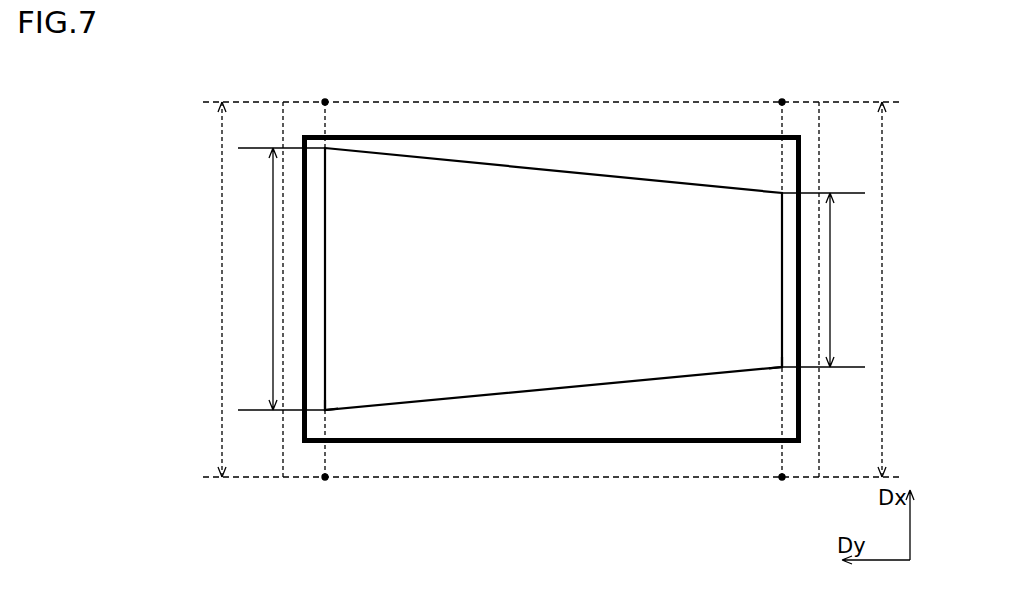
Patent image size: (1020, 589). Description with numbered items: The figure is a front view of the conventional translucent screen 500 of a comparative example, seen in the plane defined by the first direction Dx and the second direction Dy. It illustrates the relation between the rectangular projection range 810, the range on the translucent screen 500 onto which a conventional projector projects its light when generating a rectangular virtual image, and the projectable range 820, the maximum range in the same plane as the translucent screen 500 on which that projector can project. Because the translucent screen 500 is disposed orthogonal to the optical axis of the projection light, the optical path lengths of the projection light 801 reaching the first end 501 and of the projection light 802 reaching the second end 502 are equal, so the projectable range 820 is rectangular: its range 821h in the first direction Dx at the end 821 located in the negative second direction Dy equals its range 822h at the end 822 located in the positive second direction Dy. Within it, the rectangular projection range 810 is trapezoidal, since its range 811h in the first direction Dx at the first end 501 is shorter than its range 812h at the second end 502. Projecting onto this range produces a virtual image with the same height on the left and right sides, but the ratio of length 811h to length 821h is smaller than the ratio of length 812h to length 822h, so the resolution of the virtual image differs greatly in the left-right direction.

The translucent screen 500 is at (410, 126).
The rectangular projection range 810 is at (666, 169).
The projectable range 820 is at (322, 99).
The end located in negative direction of second direction 821 is at (782, 480).
The end located in positive direction of second direction 822 is at (325, 480).
The projection light 801 is at (749, 448).
The first end 501 is at (773, 377).
The projection light 802 is at (361, 471).
The second end 502 is at (328, 423).
The range in first direction of projection light at first end 811h is at (830, 260).
The range in first direction of projection light at second end 812h is at (273, 273).
The range of first direction at end in negative second direction 821h is at (882, 293).
The range of first direction at end in positive second direction 822h is at (222, 290).